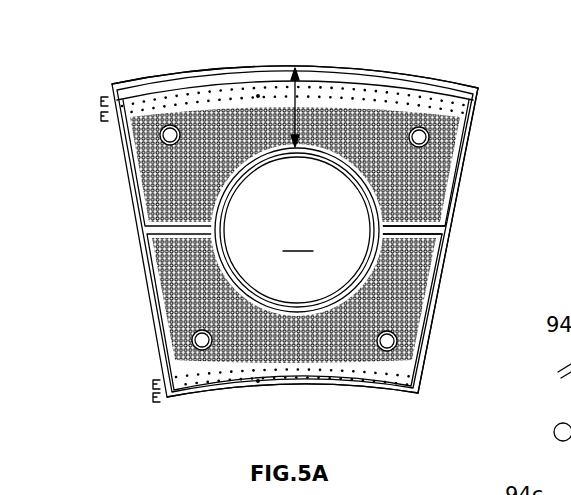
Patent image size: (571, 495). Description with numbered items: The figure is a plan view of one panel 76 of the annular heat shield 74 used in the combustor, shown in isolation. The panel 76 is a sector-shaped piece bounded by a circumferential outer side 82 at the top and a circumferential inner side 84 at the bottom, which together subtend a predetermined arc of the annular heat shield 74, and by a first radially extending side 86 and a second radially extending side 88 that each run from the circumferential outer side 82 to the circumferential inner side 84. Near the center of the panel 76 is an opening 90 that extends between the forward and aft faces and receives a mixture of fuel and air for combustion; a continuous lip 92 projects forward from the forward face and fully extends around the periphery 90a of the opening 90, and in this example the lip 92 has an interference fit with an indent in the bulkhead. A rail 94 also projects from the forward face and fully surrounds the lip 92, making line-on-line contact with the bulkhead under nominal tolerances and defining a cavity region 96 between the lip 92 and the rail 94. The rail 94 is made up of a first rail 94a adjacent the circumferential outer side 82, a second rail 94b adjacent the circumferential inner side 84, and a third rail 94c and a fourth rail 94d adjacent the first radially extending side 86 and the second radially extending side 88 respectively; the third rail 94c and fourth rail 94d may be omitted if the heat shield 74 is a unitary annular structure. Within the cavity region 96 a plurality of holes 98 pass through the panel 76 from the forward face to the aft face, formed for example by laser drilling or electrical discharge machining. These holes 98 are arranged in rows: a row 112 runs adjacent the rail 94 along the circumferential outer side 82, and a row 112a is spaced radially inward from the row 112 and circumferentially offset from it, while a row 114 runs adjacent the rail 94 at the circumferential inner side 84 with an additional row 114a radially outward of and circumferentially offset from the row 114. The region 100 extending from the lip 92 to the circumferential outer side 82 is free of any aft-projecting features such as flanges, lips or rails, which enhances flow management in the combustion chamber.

The annular heat shield 74 is at (110, 362).
The panel 76 is at (473, 120).
The circumferential outer side 82 is at (372, 62).
The circumferential inner side 84 is at (389, 408).
The first radially extending side 86 is at (456, 277).
The second radially extending side 88 is at (139, 280).
The opening 90 is at (297, 230).
The periphery 90a is at (358, 218).
The continuous lip 92 is at (233, 180).
The rail 94 is at (126, 211).
The first rail 94a is at (164, 92).
The second rail 94b is at (316, 382).
The third rail 94c is at (124, 156).
The fourth rail 94d is at (462, 185).
The cavity region 96 is at (410, 309).
The holes 98 is at (258, 84).
The region 100 is at (297, 90).
The row of holes 112 is at (100, 100).
The row of holes 112a is at (100, 118).
The row of holes 114 is at (153, 402).
The row of holes 114a is at (150, 385).